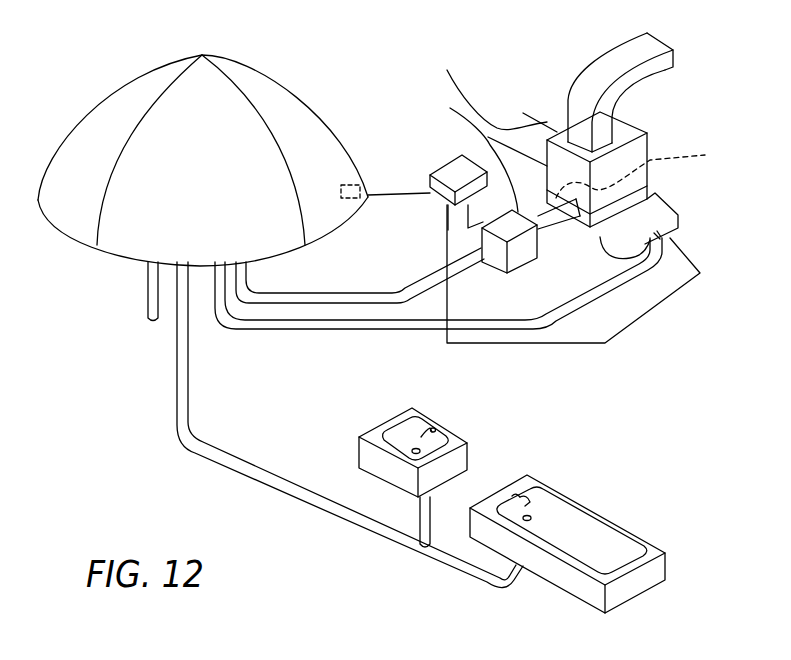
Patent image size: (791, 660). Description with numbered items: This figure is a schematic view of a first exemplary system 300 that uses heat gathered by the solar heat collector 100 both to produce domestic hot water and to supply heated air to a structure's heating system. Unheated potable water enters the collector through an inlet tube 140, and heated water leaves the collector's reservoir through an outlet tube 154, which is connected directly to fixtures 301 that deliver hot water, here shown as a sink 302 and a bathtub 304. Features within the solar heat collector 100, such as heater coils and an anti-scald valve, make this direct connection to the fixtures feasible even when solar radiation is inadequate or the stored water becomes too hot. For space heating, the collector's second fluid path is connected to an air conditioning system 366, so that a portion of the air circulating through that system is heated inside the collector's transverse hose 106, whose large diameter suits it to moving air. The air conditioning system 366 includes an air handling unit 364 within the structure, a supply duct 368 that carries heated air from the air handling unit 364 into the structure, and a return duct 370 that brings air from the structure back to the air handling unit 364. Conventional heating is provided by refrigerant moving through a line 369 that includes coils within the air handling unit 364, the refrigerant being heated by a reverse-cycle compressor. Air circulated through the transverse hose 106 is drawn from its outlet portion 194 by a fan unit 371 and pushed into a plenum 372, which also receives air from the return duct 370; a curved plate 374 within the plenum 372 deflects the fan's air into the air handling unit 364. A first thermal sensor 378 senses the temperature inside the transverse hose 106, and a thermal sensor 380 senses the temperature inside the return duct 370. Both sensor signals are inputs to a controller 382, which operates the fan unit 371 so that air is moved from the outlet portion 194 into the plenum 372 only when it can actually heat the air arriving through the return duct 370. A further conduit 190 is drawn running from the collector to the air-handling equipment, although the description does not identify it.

The solar heat collector 100 is at (283, 79).
The transverse hose 106 is at (246, 270).
The inlet tube 140 is at (147, 290).
The outlet tube 154 is at (172, 383).
The return conduit 190 is at (333, 331).
The outlet portion 194 is at (332, 290).
The first exemplary system 300 is at (156, 457).
The fixtures 301 is at (391, 576).
The sink 302 is at (428, 418).
The bathtub 304 is at (623, 525).
The air handling unit 364 is at (650, 133).
The air conditioning system 366 is at (552, 98).
The supply duct 368 is at (673, 73).
The line 369 is at (486, 88).
The return duct 370 is at (665, 198).
The fan unit 371 is at (464, 154).
The plenum 372 is at (560, 240).
The curved plate 374 is at (649, 174).
The first thermal sensor 378 is at (358, 180).
The thermal sensor 380 is at (662, 237).
The controller 382 is at (445, 162).